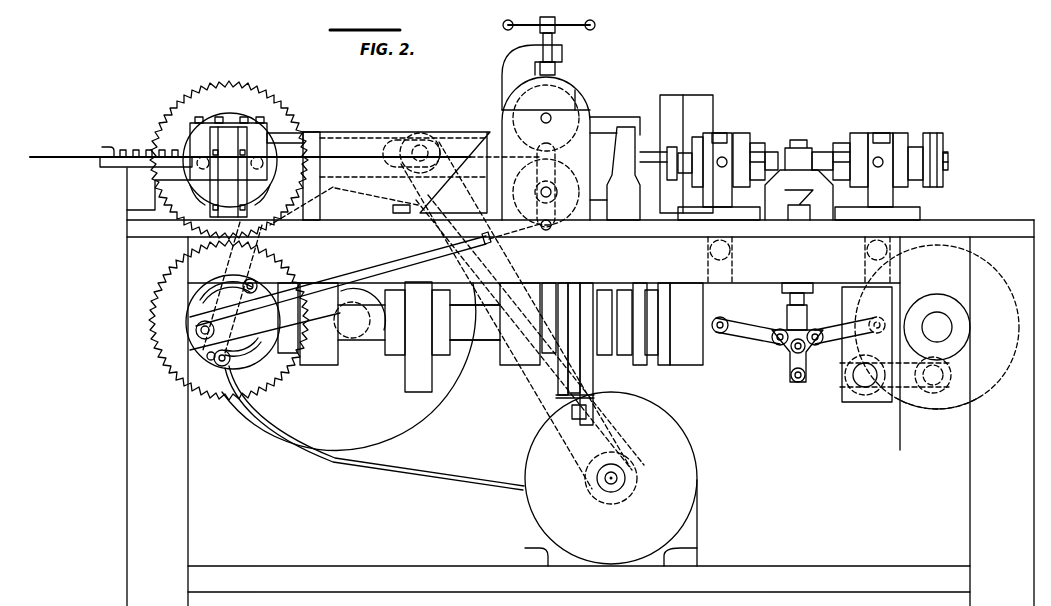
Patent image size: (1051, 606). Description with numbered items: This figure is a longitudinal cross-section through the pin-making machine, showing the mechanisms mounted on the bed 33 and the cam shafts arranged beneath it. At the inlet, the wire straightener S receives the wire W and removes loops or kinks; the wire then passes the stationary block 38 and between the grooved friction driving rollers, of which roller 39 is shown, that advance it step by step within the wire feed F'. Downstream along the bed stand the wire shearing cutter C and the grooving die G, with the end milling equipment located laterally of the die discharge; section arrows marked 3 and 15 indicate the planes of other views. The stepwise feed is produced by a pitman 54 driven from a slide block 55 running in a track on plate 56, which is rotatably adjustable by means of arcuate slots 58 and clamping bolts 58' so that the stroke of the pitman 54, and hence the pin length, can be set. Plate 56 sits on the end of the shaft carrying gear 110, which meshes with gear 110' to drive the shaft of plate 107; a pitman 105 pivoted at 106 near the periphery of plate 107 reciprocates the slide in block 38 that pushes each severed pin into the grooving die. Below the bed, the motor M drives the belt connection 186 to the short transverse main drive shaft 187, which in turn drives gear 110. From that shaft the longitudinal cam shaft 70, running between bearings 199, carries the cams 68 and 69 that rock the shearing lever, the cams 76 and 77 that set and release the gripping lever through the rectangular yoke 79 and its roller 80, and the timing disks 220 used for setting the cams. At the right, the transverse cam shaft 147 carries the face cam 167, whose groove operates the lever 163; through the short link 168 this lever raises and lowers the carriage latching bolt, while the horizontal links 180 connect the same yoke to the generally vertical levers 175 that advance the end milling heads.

The gear 110' is at (229, 151).
The pivot 106 is at (234, 110).
The pitman 105 is at (278, 133).
The plate 107 is at (182, 137).
The section line 3- 3 is at (292, 146).
The wire straightener S is at (116, 144).
The wire W is at (68, 160).
The stationary block 38 is at (450, 147).
The feed roll housing F' is at (536, 123).
The grooved friction wire driving roller 39 is at (520, 193).
The wire shearing cutter C is at (616, 115).
The grooving die G is at (695, 94).
The bed 33 is at (962, 232).
The section line 15 is at (93, 243).
The arcuate slot 58 is at (176, 297).
The plate 56 is at (205, 310).
The clamping bolt 58' is at (229, 389).
The slide block 55 is at (247, 327).
The gear 110 is at (238, 322).
The connecting link or pitman 54 is at (405, 265).
The bearing 199 is at (332, 360).
The main drive shaft 187 is at (367, 338).
The timing disk 220 is at (412, 382).
The cam shaft 70 is at (468, 342).
The cam 77 is at (560, 388).
The cam 76 is at (556, 397).
The roller 80 is at (575, 416).
The rectangular yoke 79 is at (593, 379).
The cam 68 is at (625, 356).
The cam 69 is at (655, 360).
The lever 175 is at (724, 301).
The link 180 is at (748, 333).
The link 168 is at (788, 363).
The lever 163 is at (823, 382).
The cam shaft 147 is at (943, 328).
The face cam 167 is at (937, 403).
The belt connection 186 is at (440, 488).
The motor M is at (688, 484).